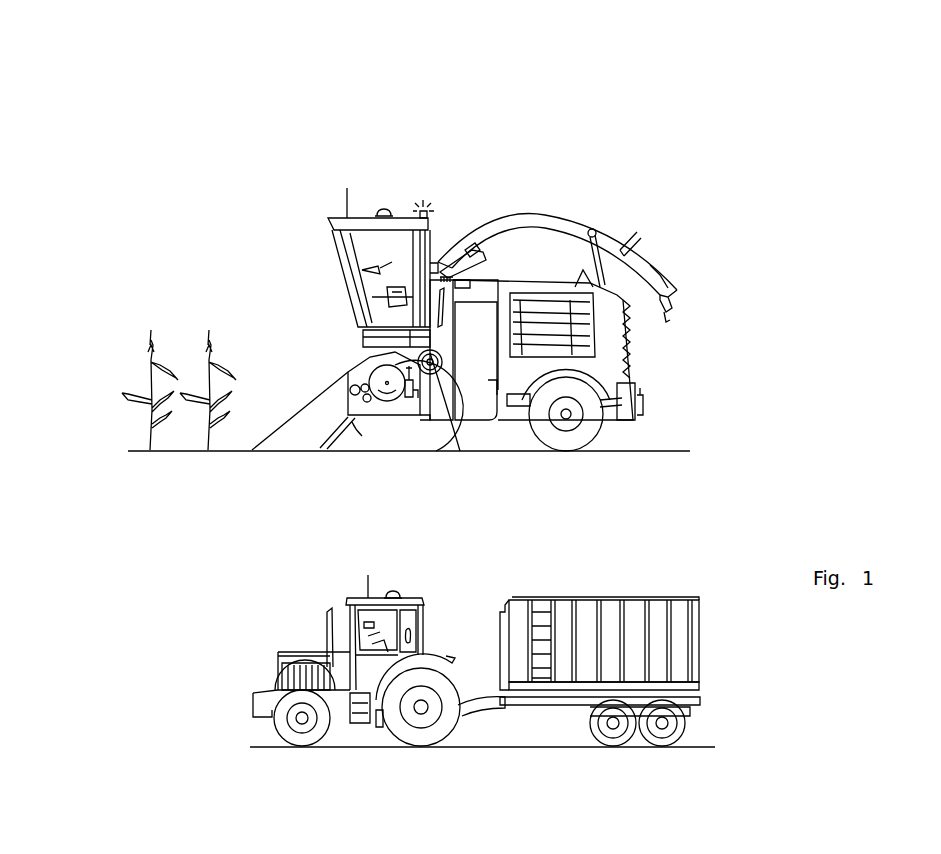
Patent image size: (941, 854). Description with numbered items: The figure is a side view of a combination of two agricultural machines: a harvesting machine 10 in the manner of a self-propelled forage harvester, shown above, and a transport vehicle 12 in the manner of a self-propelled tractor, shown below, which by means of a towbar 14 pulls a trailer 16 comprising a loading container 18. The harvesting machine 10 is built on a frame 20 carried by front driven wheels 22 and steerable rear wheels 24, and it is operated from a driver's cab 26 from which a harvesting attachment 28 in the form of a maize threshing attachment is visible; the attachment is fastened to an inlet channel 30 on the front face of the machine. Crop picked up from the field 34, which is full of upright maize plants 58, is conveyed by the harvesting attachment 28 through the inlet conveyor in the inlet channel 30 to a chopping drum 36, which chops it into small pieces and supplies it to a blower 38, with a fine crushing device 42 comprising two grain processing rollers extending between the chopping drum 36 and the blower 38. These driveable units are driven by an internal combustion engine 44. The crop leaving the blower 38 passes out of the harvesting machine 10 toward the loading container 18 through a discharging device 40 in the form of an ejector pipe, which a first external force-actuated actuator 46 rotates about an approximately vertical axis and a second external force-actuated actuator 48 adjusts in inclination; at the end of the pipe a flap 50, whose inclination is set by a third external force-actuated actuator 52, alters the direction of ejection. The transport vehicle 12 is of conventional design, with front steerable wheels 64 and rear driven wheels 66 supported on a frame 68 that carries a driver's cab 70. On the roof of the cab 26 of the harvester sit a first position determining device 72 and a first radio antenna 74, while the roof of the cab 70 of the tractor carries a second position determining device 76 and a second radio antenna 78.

The harvesting machine 10 is at (725, 254).
The transport vehicle 12 is at (357, 755).
The towbar 14 is at (494, 732).
The trailer 16 is at (588, 752).
The loading container 18 is at (632, 615).
The frame 20 is at (527, 449).
The front driven wheels 22 is at (378, 437).
The steerable rear wheels 24 is at (566, 452).
The driver's cab 26 is at (352, 262).
The harvesting attachment 28 is at (296, 421).
The inlet channel 30 is at (350, 418).
The field 34 is at (124, 436).
The chopping drum 36 is at (388, 398).
The blower 38 is at (455, 385).
The discharging device 40 is at (548, 224).
The fine crushing device 42 is at (423, 374).
The internal combustion engine 44 is at (592, 313).
The first external force-actuated actuator 46 is at (462, 290).
The second external force-actuated actuator 48 is at (468, 266).
The flap 50 is at (672, 276).
The third external force-actuated actuator 52 is at (596, 232).
The maize plants 58 is at (215, 370).
The front steerable wheels 64 is at (282, 733).
The rear driven wheels 66 is at (421, 740).
The frame 68 is at (379, 730).
The driver's cab 70 is at (428, 600).
The first position determining device 72 is at (387, 210).
The first radio antenna 74 is at (348, 195).
The second position determining device 76 is at (396, 591).
The second radio antenna 78 is at (369, 580).